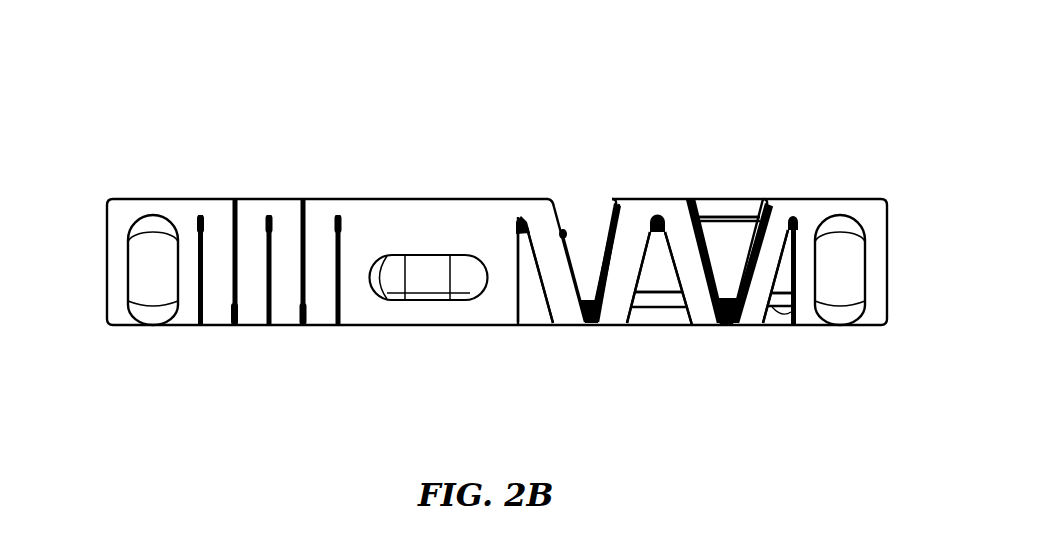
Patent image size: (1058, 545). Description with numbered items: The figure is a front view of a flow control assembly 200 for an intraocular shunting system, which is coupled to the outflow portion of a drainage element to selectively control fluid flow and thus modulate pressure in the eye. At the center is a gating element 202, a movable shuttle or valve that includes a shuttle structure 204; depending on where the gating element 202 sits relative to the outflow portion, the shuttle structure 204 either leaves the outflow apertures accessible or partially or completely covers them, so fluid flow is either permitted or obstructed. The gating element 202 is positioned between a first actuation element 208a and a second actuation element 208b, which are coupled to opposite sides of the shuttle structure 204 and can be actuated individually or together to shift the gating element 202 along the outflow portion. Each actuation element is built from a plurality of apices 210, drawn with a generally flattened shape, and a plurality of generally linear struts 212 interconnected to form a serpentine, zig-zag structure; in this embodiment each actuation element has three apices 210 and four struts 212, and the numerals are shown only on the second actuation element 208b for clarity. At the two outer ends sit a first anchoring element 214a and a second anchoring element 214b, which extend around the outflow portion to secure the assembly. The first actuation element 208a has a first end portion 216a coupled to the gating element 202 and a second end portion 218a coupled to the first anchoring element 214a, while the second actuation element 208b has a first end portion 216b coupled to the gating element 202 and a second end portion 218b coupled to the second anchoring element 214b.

The flow control assembly 200 is at (225, 78).
The gating element 202 is at (416, 130).
The shuttle structure 204 is at (423, 327).
The first actuation element 208a is at (258, 327).
The second actuation element 208b is at (707, 327).
The apices 210 is at (648, 224).
The struts 212 is at (614, 230).
The first anchoring element 214a is at (100, 205).
The second anchoring element 214b is at (892, 211).
The first end portion 216a is at (325, 199).
The first end portion 216b is at (543, 199).
The second end portion 218a is at (212, 199).
The second end portion 218b is at (786, 199).